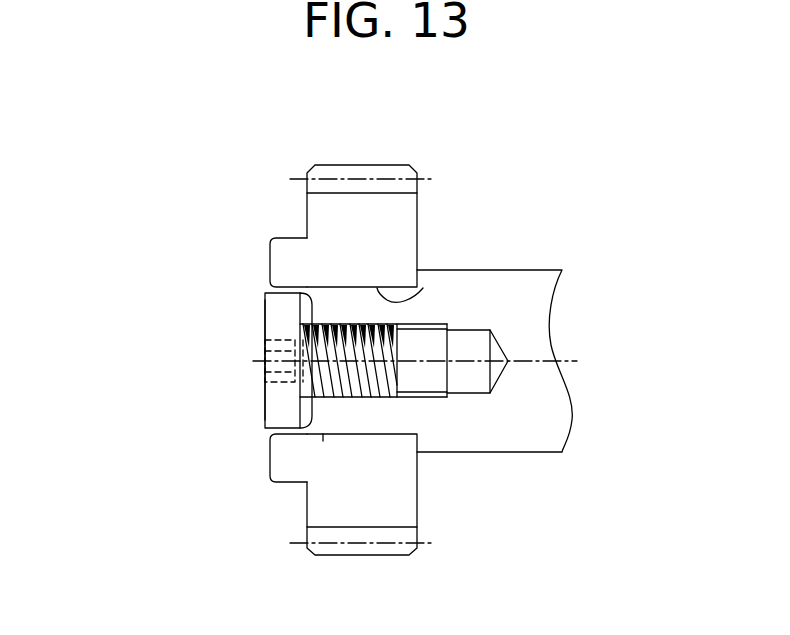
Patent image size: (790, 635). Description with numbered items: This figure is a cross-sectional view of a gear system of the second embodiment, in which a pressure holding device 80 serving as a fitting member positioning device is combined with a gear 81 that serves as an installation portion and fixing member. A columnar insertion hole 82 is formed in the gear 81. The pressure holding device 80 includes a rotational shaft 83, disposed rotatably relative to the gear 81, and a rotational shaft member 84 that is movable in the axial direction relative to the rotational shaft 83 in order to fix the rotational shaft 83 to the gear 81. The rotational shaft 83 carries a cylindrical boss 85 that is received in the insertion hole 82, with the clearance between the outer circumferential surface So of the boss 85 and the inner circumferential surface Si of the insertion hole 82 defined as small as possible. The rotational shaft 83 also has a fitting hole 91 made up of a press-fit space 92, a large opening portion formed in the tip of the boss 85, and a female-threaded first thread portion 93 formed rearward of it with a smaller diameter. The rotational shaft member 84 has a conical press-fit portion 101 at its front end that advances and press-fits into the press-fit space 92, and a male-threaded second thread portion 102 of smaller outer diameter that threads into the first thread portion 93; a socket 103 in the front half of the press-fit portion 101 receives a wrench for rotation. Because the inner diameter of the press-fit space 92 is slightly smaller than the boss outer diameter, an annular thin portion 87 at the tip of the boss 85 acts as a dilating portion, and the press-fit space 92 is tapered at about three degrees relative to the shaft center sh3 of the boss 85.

The pressure holding device 80 is at (329, 338).
The gear 81 is at (402, 234).
The insertion hole 82 is at (423, 288).
The rotational shaft 83 is at (513, 290).
The rotational shaft member 84 is at (365, 409).
The boss 85 is at (367, 437).
The thin portion 87 is at (292, 286).
The fitting hole 91 is at (467, 393).
The press-fit space 92 is at (310, 424).
The first thread portion 93 is at (418, 394).
The press-fit portion 101 is at (288, 322).
The second thread portion 102 is at (392, 441).
The socket 103 is at (266, 360).
The inner circumferential surface Si is at (261, 306).
The outer circumferential surface So is at (325, 436).
The shaft center sh3 is at (523, 361).